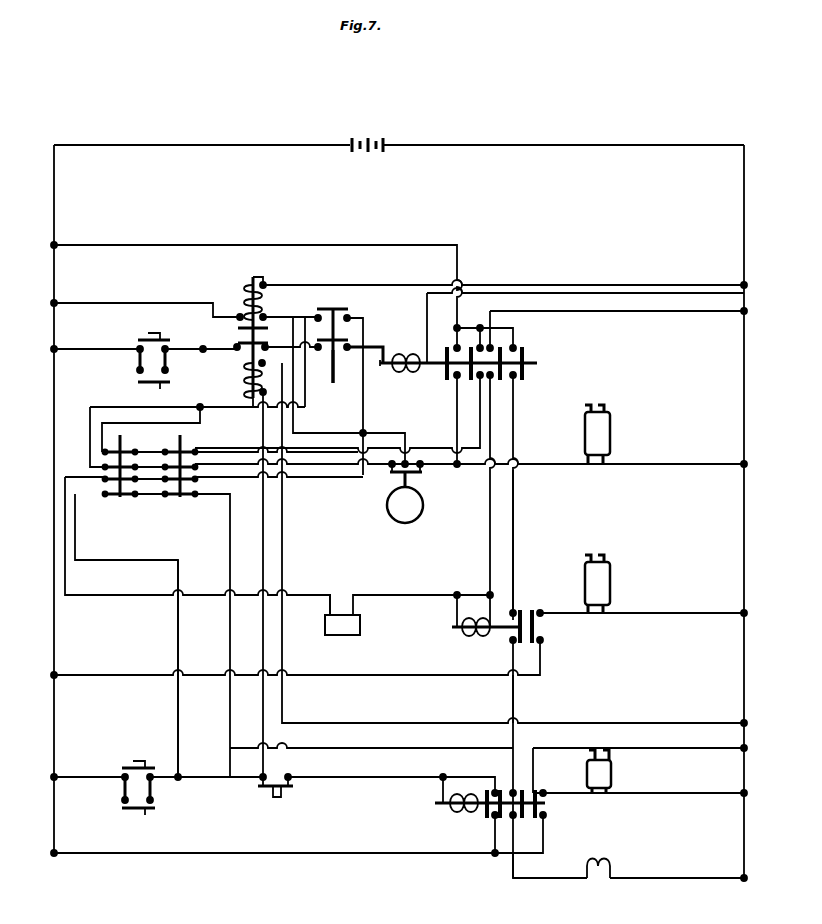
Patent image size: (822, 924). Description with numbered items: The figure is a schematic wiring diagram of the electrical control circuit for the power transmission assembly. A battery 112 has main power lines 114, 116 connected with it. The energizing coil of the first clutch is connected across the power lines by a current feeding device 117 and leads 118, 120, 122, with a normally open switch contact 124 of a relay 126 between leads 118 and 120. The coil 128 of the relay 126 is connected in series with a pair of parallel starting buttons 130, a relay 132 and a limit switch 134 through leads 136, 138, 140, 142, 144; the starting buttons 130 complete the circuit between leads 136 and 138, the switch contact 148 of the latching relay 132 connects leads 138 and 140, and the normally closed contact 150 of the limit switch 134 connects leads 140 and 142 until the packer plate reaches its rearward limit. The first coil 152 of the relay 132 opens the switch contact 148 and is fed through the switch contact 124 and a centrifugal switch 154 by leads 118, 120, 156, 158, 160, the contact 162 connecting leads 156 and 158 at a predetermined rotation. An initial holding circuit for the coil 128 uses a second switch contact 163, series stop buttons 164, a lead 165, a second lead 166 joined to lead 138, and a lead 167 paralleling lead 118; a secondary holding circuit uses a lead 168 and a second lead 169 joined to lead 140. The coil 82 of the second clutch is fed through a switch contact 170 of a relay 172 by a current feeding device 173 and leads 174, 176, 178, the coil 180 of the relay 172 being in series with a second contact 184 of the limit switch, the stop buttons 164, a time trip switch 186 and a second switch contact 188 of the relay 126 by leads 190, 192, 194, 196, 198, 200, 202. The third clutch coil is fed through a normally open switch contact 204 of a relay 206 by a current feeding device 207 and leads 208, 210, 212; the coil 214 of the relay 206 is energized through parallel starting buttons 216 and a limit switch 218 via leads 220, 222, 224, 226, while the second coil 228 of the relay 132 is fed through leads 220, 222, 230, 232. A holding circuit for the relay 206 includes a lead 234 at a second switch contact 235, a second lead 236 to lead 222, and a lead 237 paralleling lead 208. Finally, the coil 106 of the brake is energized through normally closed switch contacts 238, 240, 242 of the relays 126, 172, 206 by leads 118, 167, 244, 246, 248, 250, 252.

The main power line 114 is at (152, 145).
The battery 112 is at (385, 138).
The main power line 116 is at (593, 144).
The lead 118 is at (142, 245).
The second contact of limit switch 184 is at (378, 285).
The lead 160 is at (592, 284).
The lead 144 is at (551, 292).
The lead 190 is at (119, 303).
The lead 136 is at (102, 349).
The starting buttons 130 is at (138, 362).
The lead 138 is at (226, 345).
The relay 132 is at (242, 288).
The first coil 152 is at (240, 300).
The switch contact 148 is at (245, 374).
The coil 82 is at (265, 317).
The lead 140 is at (260, 298).
The lead 192 is at (316, 298).
The limit switch 134 is at (330, 290).
The contact 150 is at (328, 374).
The lead 142 is at (370, 337).
The switch contact 124 is at (440, 357).
The relay 126 is at (410, 378).
The coil 128 is at (404, 376).
The switch contact 238 is at (528, 365).
The second switch contact 163 is at (458, 380).
The lead 167 is at (457, 326).
The lead 244 is at (516, 328).
The lead 202 is at (614, 311).
The second switch contact 188 is at (495, 380).
The lead 120 is at (514, 448).
The lead 200 is at (493, 538).
The lead 122 is at (696, 462).
The current feeding device 117 is at (598, 426).
The lead 158 is at (384, 434).
The lead 169 is at (100, 408).
The stop buttons 164 is at (182, 441).
The lead 165 is at (244, 433).
The lead 168 is at (230, 502).
The lead 194 is at (326, 478).
The lead 174 is at (145, 676).
The lead 230 is at (250, 642).
The lead 236 is at (175, 706).
The lead 232 is at (425, 708).
The lead 234 is at (318, 746).
The contact 162 is at (388, 476).
The centrifugal switch 154 is at (405, 526).
The lead 156 is at (440, 468).
The lead 246 is at (514, 562).
The time trip switch 186 is at (325, 628).
The lead 196 is at (302, 595).
The lead 198 is at (359, 595).
The relay 172 is at (445, 628).
The coil 180 is at (470, 636).
The switch contact 170 is at (532, 612).
The switch contact 240 is at (519, 610).
The lead 176 is at (548, 623).
The lead 178 is at (678, 616).
The current feeding device 173 is at (608, 582).
The lead 248 is at (514, 706).
The lead 220 is at (98, 776).
The starting buttons 216 is at (122, 792).
The lead 222 is at (234, 776).
The limit switch 218 is at (269, 794).
The lead 224 is at (348, 778).
The second switch contact 235 is at (444, 778).
The relay 206 is at (425, 802).
The coil 214 is at (452, 816).
The switch contact 204 is at (546, 804).
The lead 237 is at (490, 828).
The switch contact 242 is at (540, 820).
The lead 210 is at (578, 791).
The current feeding device 207 is at (612, 774).
The lead 226 is at (612, 748).
The lead 212 is at (700, 793).
The lead 208 is at (204, 858).
The lead 250 is at (530, 880).
The coil 106 is at (612, 866).
The lead 252 is at (694, 881).
The lead 166 is at (201, 402).
The second coil 228 is at (249, 387).